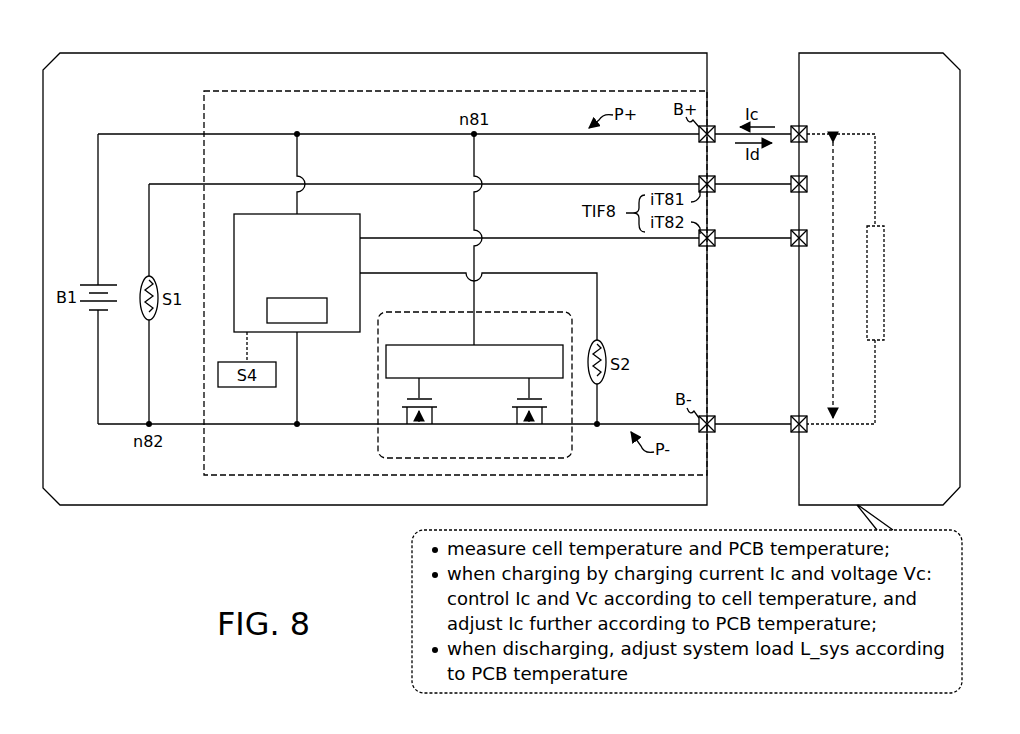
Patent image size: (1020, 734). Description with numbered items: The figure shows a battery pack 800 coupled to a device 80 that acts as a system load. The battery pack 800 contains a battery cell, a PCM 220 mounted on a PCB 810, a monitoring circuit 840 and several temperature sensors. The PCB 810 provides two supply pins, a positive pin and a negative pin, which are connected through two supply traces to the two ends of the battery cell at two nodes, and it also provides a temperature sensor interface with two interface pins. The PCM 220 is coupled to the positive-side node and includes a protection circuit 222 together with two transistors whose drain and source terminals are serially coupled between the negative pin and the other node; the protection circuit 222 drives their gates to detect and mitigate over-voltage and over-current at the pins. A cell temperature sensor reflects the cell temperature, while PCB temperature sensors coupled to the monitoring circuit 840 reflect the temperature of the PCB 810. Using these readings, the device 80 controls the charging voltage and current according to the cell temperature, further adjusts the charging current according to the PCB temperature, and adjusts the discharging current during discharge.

The battery pack 800 is at (420, 53).
The device 80 is at (858, 53).
The PCB 810 is at (204, 113).
The monitoring circuit 840 is at (361, 218).
The PCM 220 is at (430, 312).
The protection circuit 222 is at (499, 381).